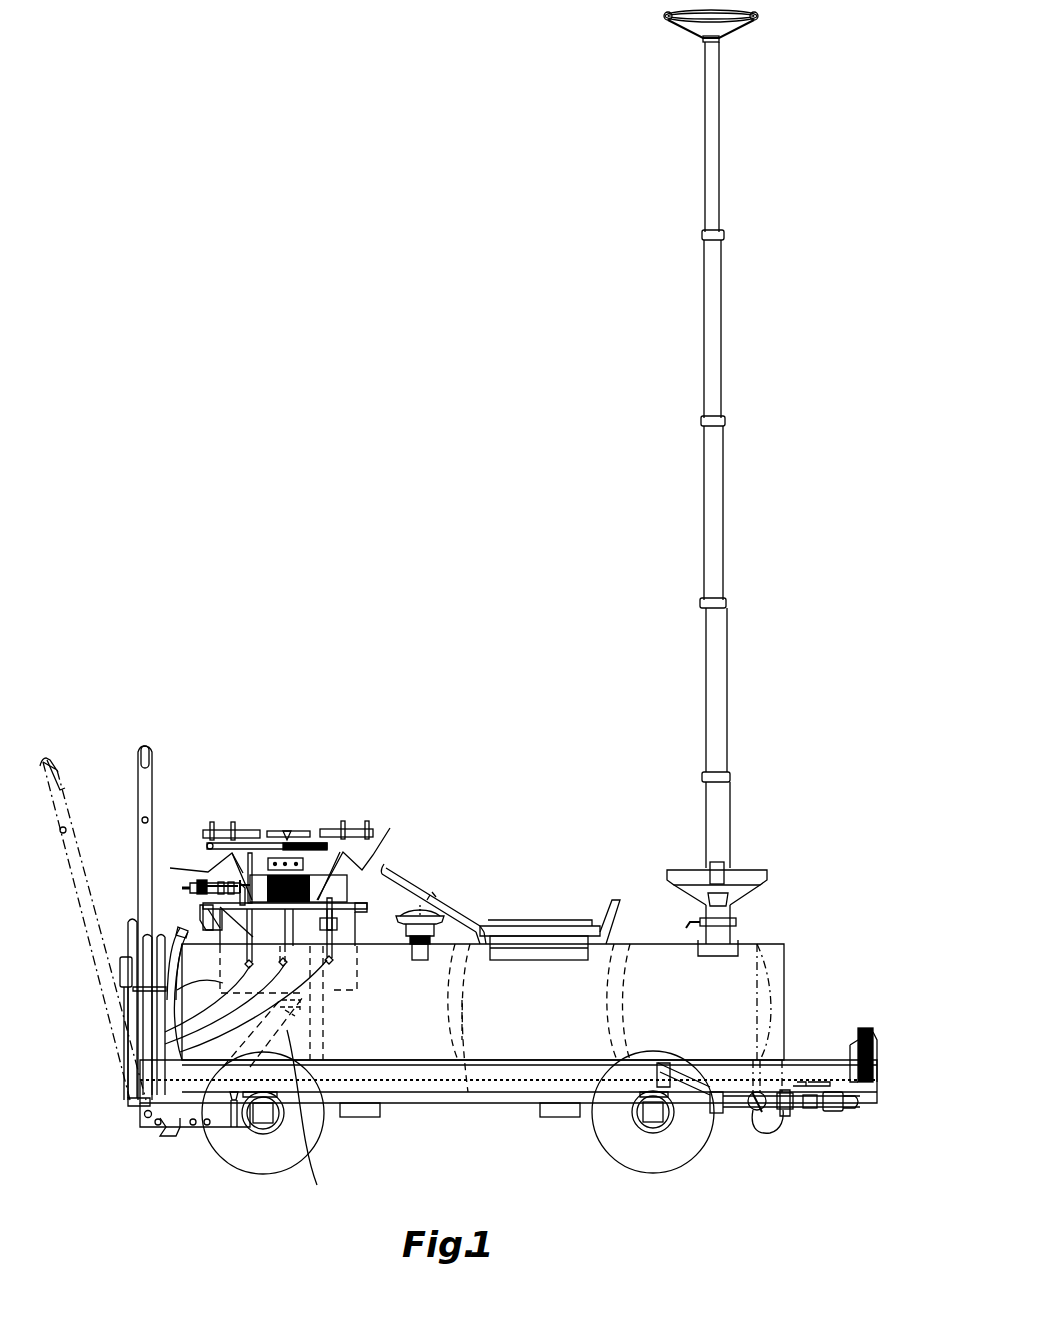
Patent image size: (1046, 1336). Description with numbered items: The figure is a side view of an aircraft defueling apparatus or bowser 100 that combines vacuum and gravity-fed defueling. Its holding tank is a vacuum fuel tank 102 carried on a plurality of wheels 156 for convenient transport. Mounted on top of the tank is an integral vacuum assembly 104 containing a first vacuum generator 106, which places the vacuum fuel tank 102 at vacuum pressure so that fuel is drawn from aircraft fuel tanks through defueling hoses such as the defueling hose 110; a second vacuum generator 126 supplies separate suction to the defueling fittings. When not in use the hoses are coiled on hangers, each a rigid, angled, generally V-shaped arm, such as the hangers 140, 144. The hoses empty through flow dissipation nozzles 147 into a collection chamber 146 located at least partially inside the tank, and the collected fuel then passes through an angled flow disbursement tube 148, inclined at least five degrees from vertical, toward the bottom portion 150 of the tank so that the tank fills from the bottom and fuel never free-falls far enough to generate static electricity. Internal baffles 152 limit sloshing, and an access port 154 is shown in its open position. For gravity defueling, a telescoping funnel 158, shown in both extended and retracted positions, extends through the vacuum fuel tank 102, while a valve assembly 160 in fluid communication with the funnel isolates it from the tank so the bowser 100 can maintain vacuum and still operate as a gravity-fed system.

The aircraft defueling apparatus or bowser 100 is at (200, 640).
The vacuum fuel tank 102 is at (652, 945).
The vacuum assembly 104 is at (314, 800).
The first vacuum generator 106 is at (362, 845).
The defueling hose 110 is at (200, 876).
The second vacuum generator 126 is at (316, 830).
The hanger 140 is at (207, 870).
The hanger 144 is at (410, 866).
The collection chamber 146 is at (160, 1012).
The flow dissipation nozzles 147 is at (165, 1044).
The angled flow disbursement tube 148 is at (197, 974).
The bottom portion 150 is at (388, 1070).
The internal baffles 152 is at (463, 1040).
The access port 154 is at (517, 940).
The wheels 156 is at (218, 1140).
The telescoping funnel 158 is at (723, 730).
The valve assembly 160 is at (777, 1138).